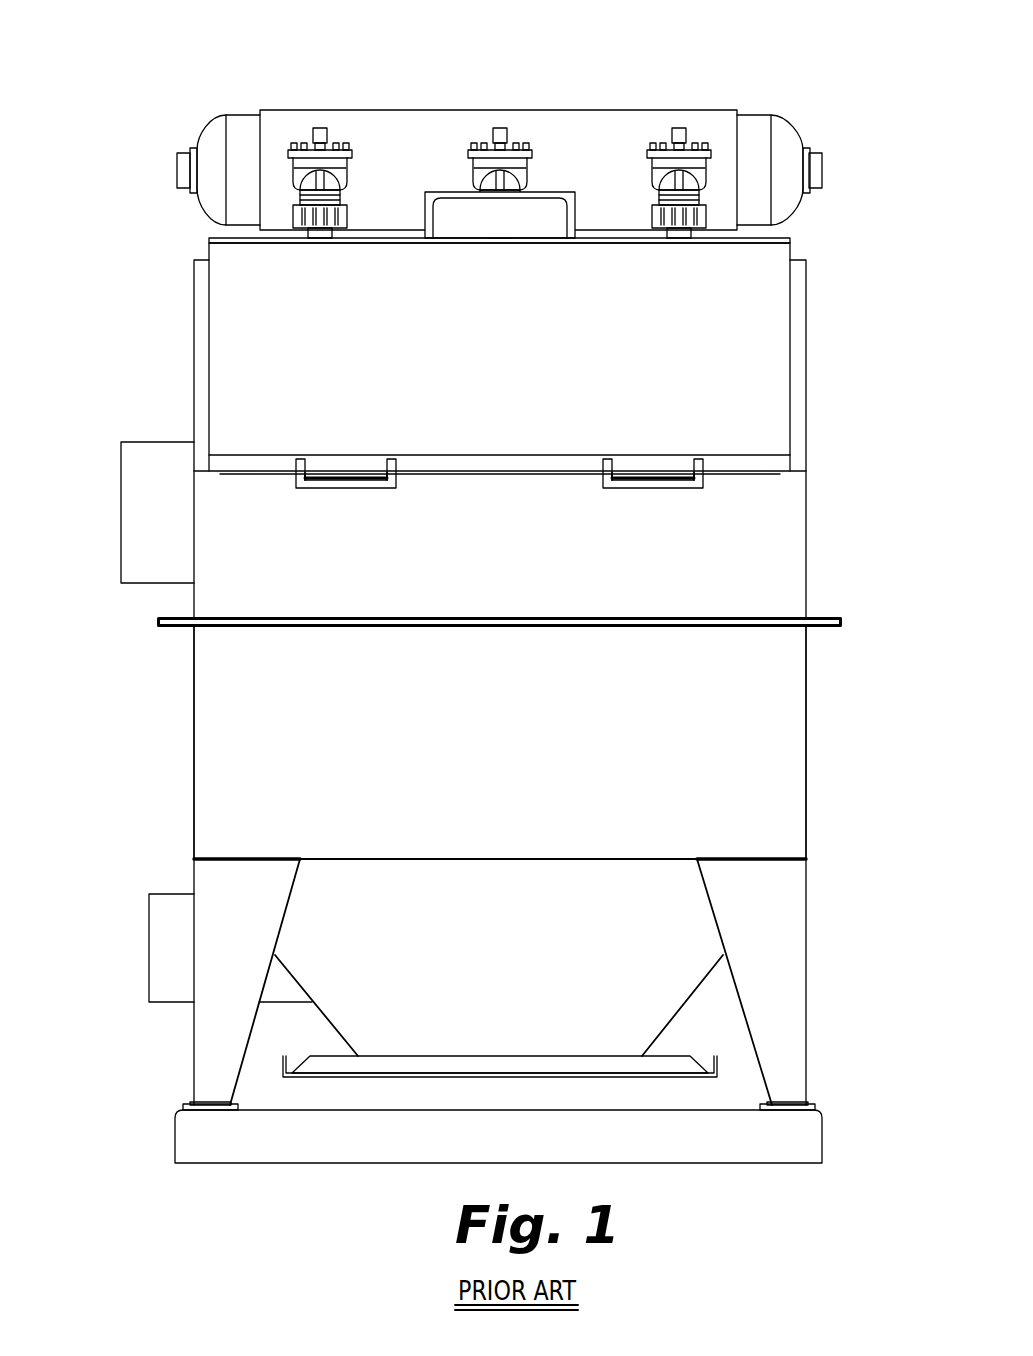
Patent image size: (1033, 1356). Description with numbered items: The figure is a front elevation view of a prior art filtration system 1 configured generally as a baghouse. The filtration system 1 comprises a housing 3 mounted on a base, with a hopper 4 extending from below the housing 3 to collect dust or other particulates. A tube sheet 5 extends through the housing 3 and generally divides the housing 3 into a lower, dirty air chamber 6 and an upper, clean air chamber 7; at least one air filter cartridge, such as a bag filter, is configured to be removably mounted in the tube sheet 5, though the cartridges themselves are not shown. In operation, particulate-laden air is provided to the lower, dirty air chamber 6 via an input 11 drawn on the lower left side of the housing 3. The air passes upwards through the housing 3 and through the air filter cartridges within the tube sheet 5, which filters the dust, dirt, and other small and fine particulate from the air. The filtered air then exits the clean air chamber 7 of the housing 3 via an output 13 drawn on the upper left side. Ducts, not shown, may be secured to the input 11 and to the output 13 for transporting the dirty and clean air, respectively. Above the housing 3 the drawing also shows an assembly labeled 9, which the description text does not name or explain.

The filtration system 1 is at (83, 135).
The housing 3 is at (863, 575).
The hopper 4 is at (655, 965).
The tube sheet 5 is at (838, 628).
The dirty air chamber 6 is at (770, 750).
The clean air chamber 7 is at (770, 518).
The compressed air manifold 9 is at (603, 82).
The input 11 is at (163, 963).
The output 13 is at (142, 523).